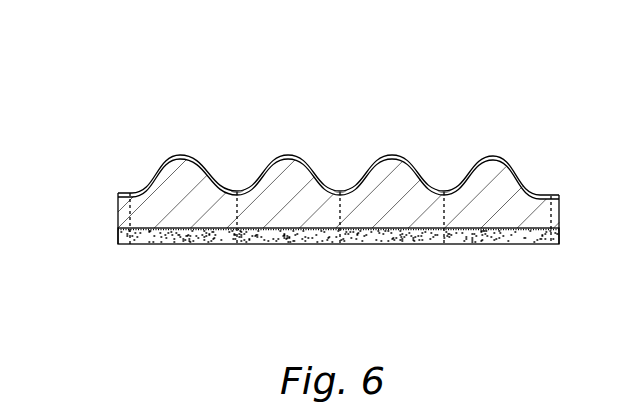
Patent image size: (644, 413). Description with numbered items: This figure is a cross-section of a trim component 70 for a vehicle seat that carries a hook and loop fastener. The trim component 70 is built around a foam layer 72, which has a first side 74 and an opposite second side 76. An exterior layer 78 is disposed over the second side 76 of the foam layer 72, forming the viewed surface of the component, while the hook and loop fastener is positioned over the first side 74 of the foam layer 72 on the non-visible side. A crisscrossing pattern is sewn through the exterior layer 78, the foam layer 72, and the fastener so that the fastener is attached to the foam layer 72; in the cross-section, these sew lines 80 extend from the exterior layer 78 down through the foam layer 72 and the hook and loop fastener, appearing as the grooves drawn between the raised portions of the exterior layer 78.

The trim component 70 is at (523, 71).
The foam layer 72 is at (118, 212).
The first side 74 is at (166, 226).
The second side 76 is at (172, 178).
The exterior layer 78 is at (503, 157).
The sew lines 80 is at (246, 192).